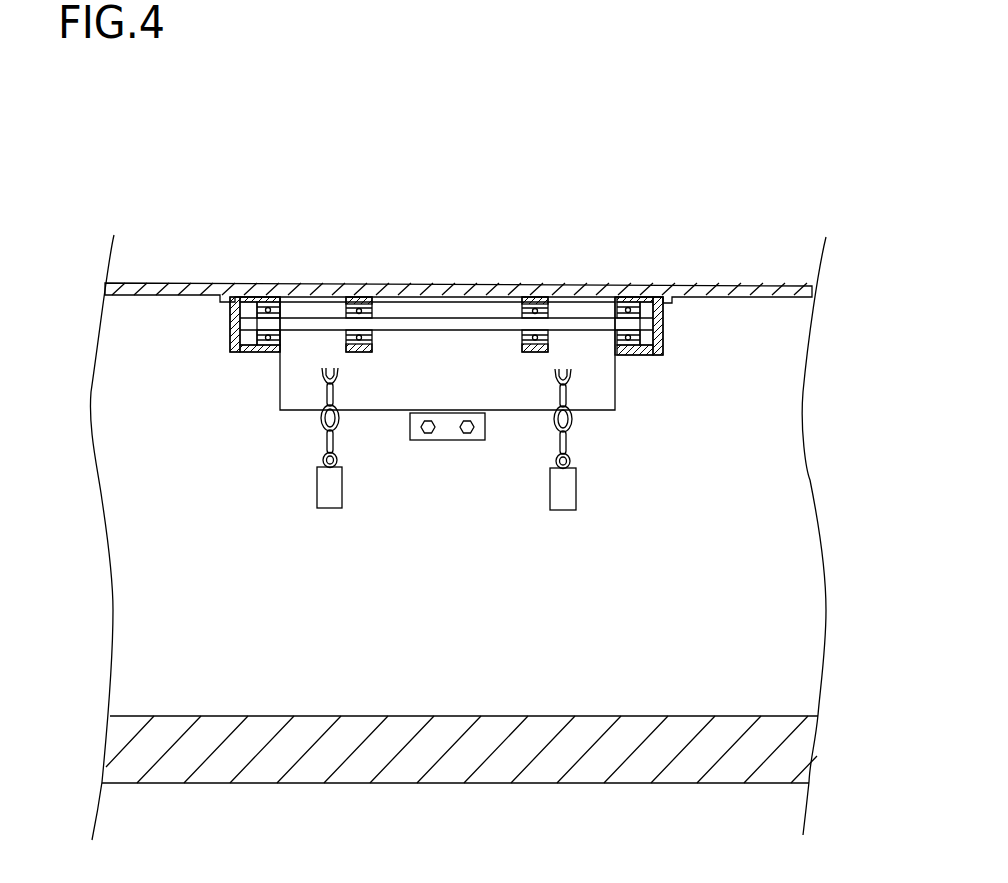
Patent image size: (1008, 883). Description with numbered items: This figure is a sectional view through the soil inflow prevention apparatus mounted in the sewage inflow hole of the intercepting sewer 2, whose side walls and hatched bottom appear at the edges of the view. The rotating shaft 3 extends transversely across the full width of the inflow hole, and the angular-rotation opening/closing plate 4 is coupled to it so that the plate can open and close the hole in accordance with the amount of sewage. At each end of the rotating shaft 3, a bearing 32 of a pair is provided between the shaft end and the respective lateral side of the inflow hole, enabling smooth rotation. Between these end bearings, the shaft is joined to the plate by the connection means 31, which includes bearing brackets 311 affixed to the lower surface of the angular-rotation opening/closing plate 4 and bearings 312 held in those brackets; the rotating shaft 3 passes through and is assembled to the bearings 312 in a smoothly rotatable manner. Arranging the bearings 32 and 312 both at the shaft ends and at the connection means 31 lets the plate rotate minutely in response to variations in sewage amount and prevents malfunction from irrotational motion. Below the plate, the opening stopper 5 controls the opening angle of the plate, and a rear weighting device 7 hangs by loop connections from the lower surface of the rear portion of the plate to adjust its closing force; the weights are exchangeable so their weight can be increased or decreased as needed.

The intercepting sewer 2 is at (420, 685).
The rotating shaft 3 is at (583, 327).
The angular-rotation opening/closing plate 4 is at (607, 290).
The opening stopper 5 is at (442, 413).
The rear weighting device 7 is at (327, 492).
The connection means 31 is at (451, 259).
The bearing bracket 311 is at (358, 303).
The bearing 312 is at (348, 310).
The bearing 32 is at (265, 308).